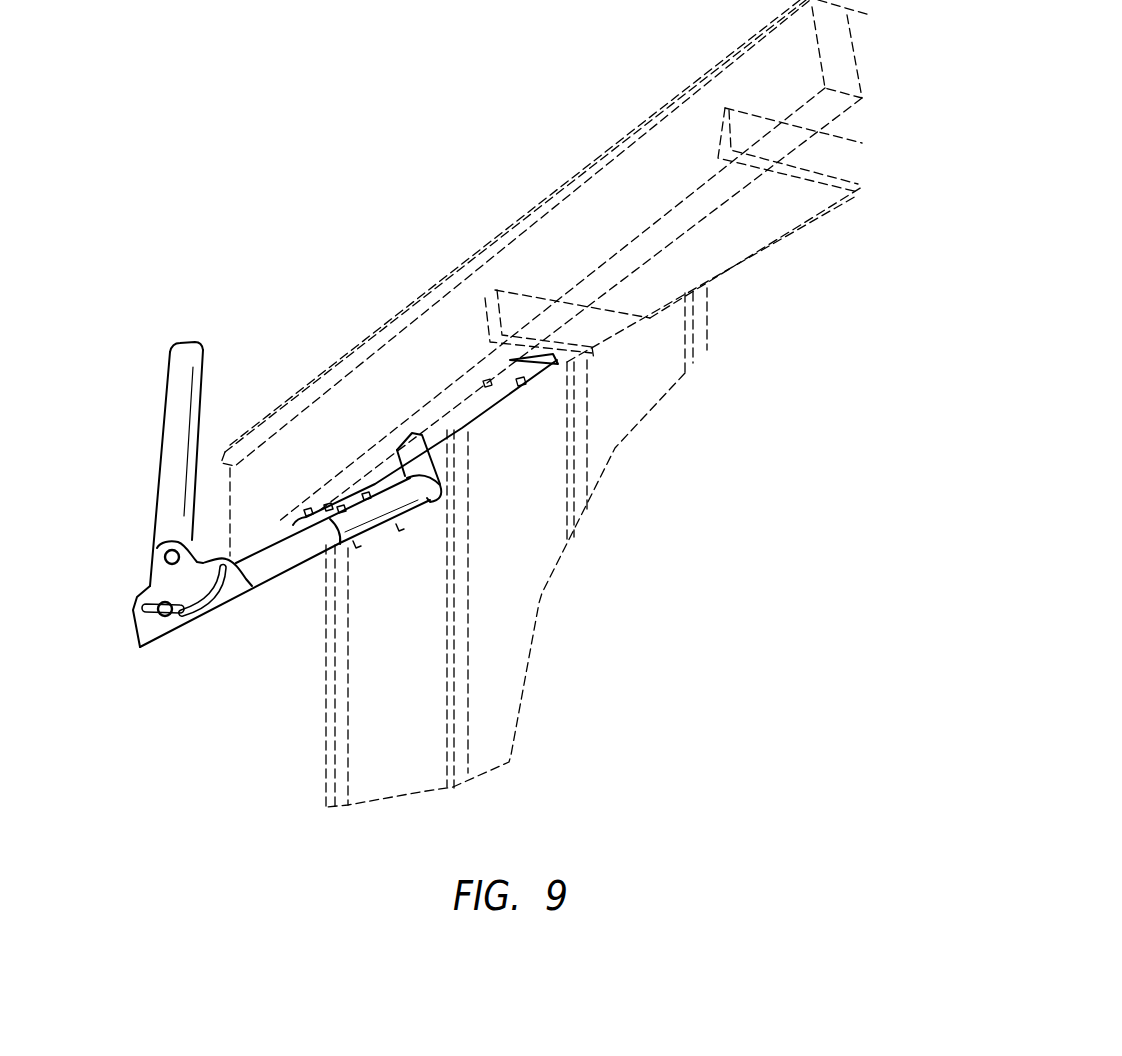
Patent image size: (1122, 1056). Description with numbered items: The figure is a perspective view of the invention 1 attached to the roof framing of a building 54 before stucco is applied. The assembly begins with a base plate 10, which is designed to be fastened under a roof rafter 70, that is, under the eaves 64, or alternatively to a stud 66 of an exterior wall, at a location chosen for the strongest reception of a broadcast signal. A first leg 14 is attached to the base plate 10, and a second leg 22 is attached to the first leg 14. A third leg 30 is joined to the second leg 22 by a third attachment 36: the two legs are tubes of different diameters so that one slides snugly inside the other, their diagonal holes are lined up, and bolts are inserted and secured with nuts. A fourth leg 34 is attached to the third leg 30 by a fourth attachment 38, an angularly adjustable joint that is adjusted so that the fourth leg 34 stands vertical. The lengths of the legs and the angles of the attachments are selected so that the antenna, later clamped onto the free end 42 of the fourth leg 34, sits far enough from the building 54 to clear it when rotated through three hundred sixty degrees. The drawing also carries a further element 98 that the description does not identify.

The invention 1 is at (136, 490).
The base plate 10 is at (452, 418).
The first leg 14 is at (417, 465).
The second leg 22 is at (407, 493).
The third leg 30 is at (277, 563).
The handle lever 34 is at (173, 437).
The third attachment 36 is at (352, 532).
The fourth attachment 38 is at (182, 652).
The free end 42 is at (190, 333).
The building 54 is at (318, 745).
The eaves 64 is at (702, 265).
The stud 66 is at (468, 691).
The roof rafter 70 is at (781, 180).
The fastener tab 98 is at (385, 533).